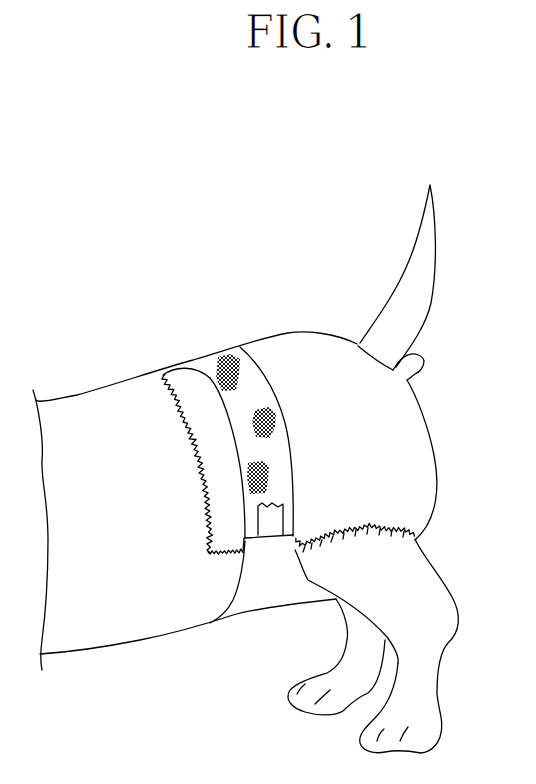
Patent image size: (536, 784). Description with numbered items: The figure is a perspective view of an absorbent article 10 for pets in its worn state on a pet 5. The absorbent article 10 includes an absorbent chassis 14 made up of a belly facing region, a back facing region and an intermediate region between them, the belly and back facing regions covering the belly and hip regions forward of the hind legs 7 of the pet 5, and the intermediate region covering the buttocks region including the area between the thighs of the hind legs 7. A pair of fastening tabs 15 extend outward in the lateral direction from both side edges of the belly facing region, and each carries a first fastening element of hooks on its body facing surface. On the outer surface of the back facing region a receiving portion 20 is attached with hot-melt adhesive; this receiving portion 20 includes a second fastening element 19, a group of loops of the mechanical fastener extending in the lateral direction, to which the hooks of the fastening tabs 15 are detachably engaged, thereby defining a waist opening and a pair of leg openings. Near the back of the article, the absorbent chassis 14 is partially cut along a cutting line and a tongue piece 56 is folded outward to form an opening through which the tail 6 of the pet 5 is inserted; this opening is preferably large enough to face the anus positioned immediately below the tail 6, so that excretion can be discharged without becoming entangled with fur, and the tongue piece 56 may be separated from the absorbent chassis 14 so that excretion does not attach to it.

The pet 5 is at (118, 620).
The tail 6 is at (419, 268).
The hind legs 7 is at (358, 637).
The absorbent article 10 is at (301, 412).
The absorbent chassis 14 is at (328, 353).
The fastening tabs 15 is at (257, 521).
The second fastening element 19 is at (223, 360).
The receiving portion 20 is at (207, 385).
The tongue piece 56 is at (415, 362).